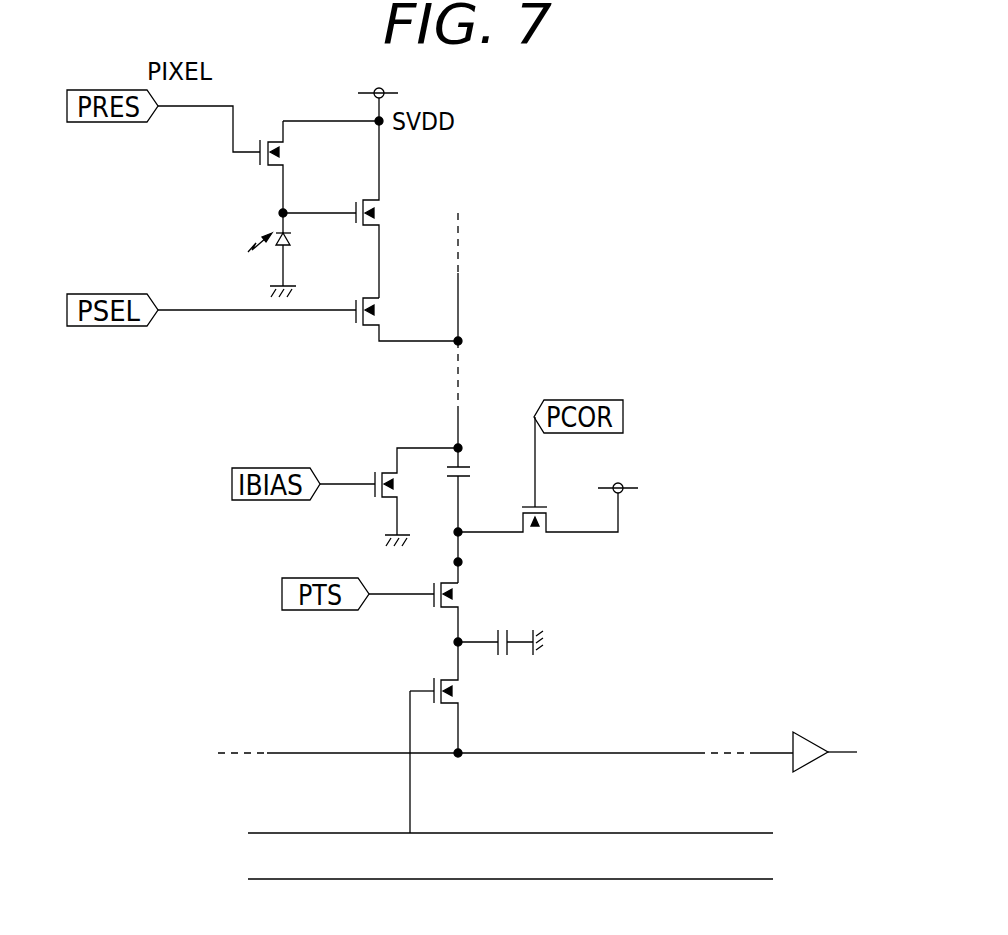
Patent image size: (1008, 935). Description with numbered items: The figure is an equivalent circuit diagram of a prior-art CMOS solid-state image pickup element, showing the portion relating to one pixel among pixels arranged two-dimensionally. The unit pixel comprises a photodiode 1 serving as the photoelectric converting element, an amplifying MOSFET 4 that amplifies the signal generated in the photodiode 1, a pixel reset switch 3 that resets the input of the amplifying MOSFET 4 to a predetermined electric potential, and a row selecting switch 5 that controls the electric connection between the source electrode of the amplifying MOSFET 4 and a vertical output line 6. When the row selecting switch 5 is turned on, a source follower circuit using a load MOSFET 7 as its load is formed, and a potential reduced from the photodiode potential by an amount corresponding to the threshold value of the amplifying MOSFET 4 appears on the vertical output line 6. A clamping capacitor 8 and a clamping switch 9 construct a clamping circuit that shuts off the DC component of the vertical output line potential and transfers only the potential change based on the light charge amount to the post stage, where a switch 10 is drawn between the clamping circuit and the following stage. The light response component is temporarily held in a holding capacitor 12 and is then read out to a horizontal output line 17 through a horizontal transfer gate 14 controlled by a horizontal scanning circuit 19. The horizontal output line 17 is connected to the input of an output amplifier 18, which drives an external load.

The photodiode 1 is at (291, 241).
The pixel reset switch 3 is at (285, 152).
The amplifying MOSFET 4 is at (381, 210).
The row selecting switch 5 is at (381, 306).
The vertical output line 6 is at (459, 306).
The load MOSFET 7 is at (389, 472).
The clamping capacitor 8 is at (468, 472).
The clamping switch 9 is at (548, 520).
The transfer transistor 10 is at (462, 588).
The holding capacitor 12 is at (500, 626).
The horizontal transfer gate 14 is at (462, 687).
The horizontal output line 17 is at (640, 752).
The output amplifier 18 is at (808, 738).
The horizontal scanning circuit 19 is at (690, 832).